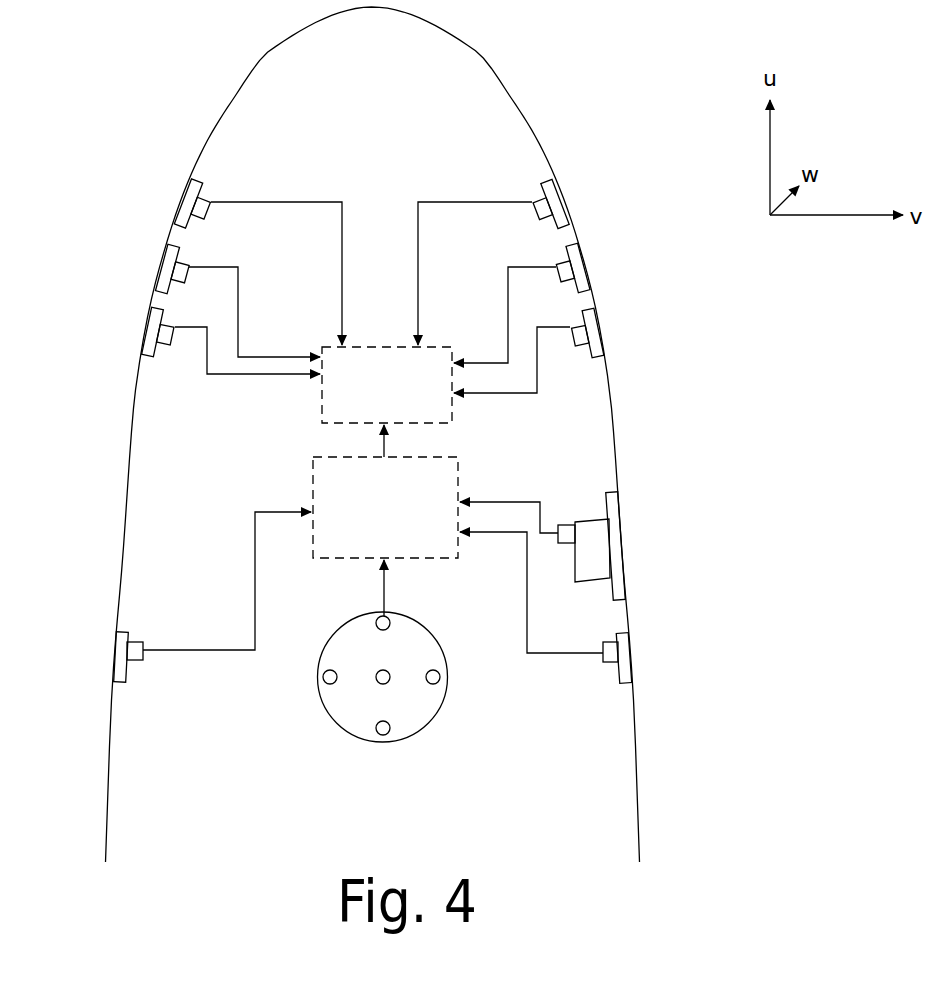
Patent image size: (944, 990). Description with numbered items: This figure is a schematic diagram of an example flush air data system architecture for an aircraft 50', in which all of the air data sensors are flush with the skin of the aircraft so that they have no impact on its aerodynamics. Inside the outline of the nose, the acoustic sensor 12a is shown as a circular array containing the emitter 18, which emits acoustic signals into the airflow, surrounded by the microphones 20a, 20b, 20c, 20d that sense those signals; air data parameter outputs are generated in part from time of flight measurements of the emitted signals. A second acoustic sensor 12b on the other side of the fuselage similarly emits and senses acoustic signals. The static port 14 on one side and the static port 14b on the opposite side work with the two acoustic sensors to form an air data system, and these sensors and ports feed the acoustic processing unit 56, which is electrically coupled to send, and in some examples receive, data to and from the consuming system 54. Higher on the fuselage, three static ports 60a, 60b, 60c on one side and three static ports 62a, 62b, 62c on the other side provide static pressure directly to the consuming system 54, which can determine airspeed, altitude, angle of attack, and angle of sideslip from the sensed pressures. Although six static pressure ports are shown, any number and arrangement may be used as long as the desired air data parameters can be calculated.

The aircraft 50' is at (373, 434).
The consuming system 54 is at (440, 347).
The acoustic processing unit 56 is at (460, 473).
The static port 60a is at (187, 190).
The static port 60b is at (163, 262).
The static port 60c is at (148, 325).
The static port 62a is at (565, 195).
The static port 62b is at (587, 262).
The static port 62c is at (603, 325).
The acoustic sensor 12a is at (400, 743).
The acoustic sensor 12b is at (633, 545).
The sensor 14 is at (115, 650).
The static port 14b is at (632, 655).
The emitter 18 is at (388, 673).
The microphone 20a is at (388, 618).
The microphone 20b is at (440, 677).
The microphone 20c is at (378, 732).
The microphone 20d is at (325, 672).